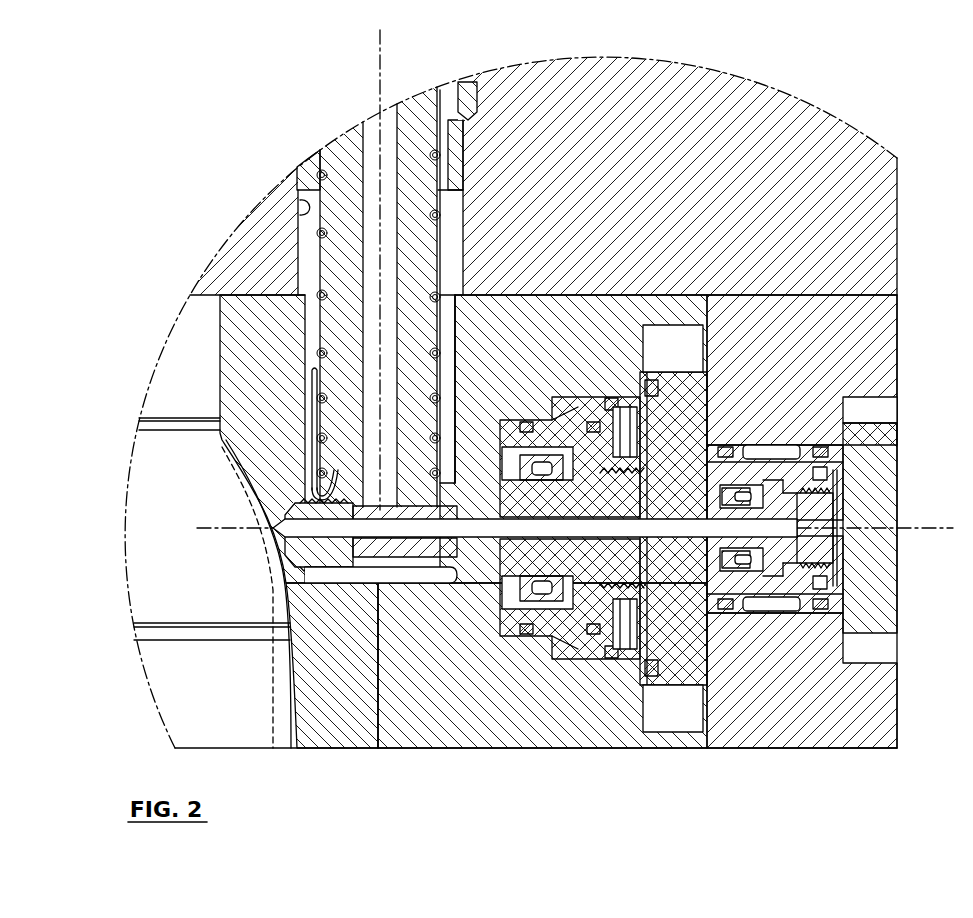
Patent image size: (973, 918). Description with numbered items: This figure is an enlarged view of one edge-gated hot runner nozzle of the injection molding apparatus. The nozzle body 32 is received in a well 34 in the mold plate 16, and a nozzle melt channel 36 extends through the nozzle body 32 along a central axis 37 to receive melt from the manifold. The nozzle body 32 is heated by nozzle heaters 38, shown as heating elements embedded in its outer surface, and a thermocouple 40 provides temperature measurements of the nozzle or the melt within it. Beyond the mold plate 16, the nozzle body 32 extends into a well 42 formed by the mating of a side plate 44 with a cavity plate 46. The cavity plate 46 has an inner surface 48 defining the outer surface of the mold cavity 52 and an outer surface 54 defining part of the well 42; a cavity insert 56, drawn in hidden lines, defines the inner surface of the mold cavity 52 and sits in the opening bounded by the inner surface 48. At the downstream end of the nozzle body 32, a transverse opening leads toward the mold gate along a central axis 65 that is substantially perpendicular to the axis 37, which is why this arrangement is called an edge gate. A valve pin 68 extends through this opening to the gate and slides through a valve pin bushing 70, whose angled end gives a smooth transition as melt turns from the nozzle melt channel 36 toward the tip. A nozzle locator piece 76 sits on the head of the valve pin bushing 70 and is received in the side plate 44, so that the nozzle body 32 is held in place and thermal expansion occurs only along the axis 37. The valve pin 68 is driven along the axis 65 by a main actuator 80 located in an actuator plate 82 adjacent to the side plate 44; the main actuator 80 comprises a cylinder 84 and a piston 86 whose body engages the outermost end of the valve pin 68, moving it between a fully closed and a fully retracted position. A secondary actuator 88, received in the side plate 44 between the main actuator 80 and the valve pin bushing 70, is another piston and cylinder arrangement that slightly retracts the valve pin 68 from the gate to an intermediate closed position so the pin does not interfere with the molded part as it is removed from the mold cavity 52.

The mold plate 16 is at (878, 204).
The nozzle body 32 is at (425, 238).
The well 34 is at (310, 208).
The nozzle melt channel 36 is at (392, 319).
The central axis 37 is at (380, 65).
The nozzle heater 38 is at (317, 232).
The thermocouple 40 is at (313, 417).
The well 42 is at (450, 331).
The side plate 44 is at (567, 723).
The cavity plate 46 is at (333, 733).
The inner surface 48 is at (285, 607).
The mold cavity 52 is at (283, 748).
The outer surface 54 is at (397, 710).
The cavity insert 56 is at (187, 350).
The central axis 65 is at (943, 528).
The valve pin 68 is at (835, 503).
The valve pin bushing 70 is at (407, 547).
The nozzle locator piece 76 is at (462, 556).
The main actuator 80 is at (783, 628).
The actuator plate 82 is at (883, 338).
The cylinder 84 is at (803, 453).
The piston 86 is at (800, 590).
The secondary actuator 88 is at (515, 660).